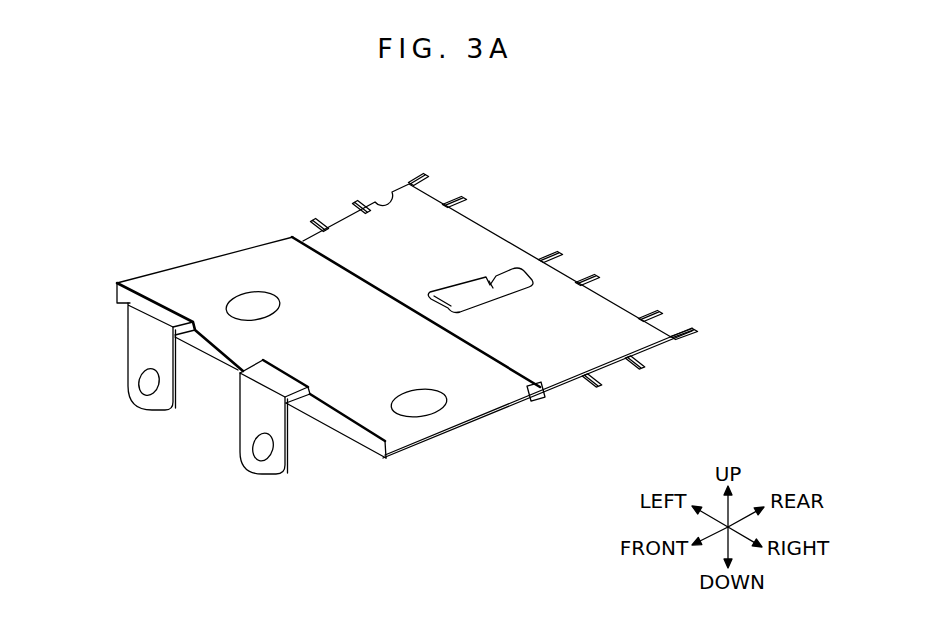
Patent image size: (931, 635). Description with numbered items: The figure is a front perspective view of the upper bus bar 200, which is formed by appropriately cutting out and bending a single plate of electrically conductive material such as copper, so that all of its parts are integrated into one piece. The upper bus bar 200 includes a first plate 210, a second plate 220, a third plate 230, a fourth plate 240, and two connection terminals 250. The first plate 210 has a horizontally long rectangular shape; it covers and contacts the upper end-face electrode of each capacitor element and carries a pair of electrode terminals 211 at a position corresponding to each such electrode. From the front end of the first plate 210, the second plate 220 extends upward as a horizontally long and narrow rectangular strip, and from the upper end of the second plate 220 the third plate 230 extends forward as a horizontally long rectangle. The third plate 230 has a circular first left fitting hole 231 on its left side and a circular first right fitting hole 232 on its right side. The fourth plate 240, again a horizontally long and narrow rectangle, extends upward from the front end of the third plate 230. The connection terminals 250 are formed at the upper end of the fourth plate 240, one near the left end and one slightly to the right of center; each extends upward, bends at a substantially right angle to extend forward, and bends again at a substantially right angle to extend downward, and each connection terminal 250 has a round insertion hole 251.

The upper bus bar 200 is at (130, 257).
The first plate 210 is at (405, 192).
The electrode terminals 211 is at (358, 204).
The second plate 220 is at (533, 402).
The third plate 230 is at (193, 288).
The first left fitting hole 231 is at (257, 300).
The first right fitting hole 232 is at (418, 402).
The fourth plate 240 is at (360, 437).
The connection terminals 250 is at (140, 407).
The insertion hole 251 is at (145, 383).